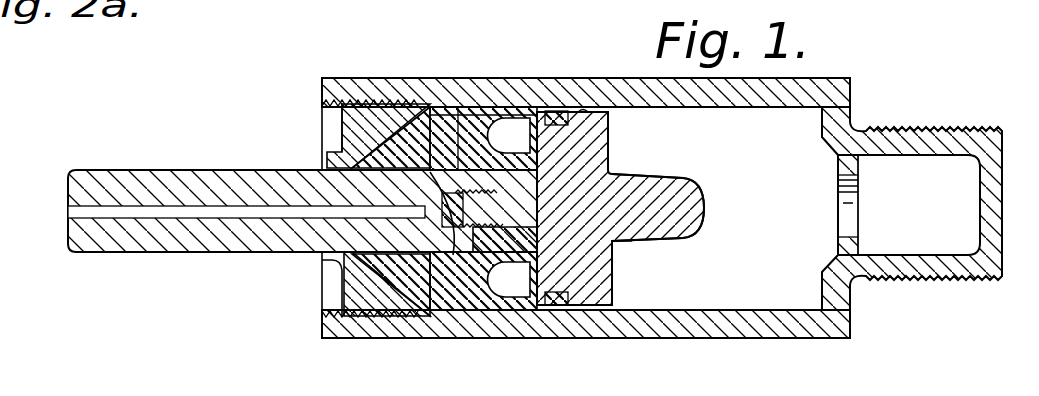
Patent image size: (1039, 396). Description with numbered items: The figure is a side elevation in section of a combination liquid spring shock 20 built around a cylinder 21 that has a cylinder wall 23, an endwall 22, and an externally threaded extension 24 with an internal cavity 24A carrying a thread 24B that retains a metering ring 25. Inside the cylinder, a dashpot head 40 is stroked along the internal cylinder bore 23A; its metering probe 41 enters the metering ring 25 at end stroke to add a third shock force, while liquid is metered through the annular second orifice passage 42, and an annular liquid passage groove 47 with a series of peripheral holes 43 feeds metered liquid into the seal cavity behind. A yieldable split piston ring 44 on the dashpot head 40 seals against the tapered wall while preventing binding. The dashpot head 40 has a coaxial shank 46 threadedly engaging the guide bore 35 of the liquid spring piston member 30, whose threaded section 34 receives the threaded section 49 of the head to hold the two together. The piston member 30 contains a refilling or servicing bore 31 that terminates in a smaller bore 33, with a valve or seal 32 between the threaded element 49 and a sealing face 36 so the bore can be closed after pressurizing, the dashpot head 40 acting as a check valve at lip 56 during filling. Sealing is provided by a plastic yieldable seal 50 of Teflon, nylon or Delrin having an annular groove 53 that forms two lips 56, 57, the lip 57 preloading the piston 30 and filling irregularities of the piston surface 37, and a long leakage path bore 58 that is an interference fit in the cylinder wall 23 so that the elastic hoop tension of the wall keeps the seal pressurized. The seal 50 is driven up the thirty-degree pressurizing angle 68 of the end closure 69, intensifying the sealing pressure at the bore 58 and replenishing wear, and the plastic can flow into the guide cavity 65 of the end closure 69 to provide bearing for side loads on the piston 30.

The liquid spring shock 20 is at (866, 72).
The cylinder 21 is at (458, 78).
The endwall 22 is at (836, 118).
The cylinder wall 23 is at (480, 78).
The cylinder bore 23A is at (777, 110).
The externally threaded extension 24 is at (968, 220).
The internal cavity 24A is at (935, 65).
The thread 24B is at (858, 250).
The metering ring 25 is at (860, 170).
The liquid spring piston member 30 is at (141, 170).
The refilling or servicing bore 31 is at (153, 217).
The valve or seal 32 is at (435, 313).
The smaller bore 33 is at (423, 78).
The threaded section 34 is at (468, 313).
The guide bore 35 is at (660, 176).
The sealing face 36 is at (335, 245).
The piston surface 37 is at (257, 170).
The dashpot head 40 is at (628, 313).
The metering probe 41 is at (704, 208).
The second orifice passage 42 is at (610, 113).
The peripheral holes 43 is at (610, 150).
The piston ring 44 is at (560, 313).
The coaxial shank 46 is at (632, 241).
The annular liquid passage groove 47 is at (597, 95).
The threaded section 49 is at (615, 272).
The seal 50 is at (360, 335).
The annular groove 53 is at (530, 78).
The lip 56 is at (520, 135).
The lip 57 is at (550, 110).
The long leakage path bore 58 is at (306, 168).
The guide cavity 65 is at (322, 252).
The pressurizing angle 68 is at (360, 100).
The end closure 69 is at (345, 313).